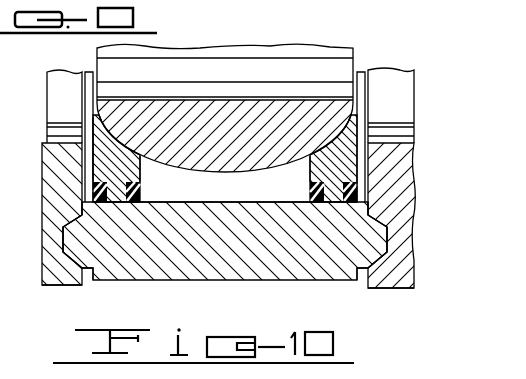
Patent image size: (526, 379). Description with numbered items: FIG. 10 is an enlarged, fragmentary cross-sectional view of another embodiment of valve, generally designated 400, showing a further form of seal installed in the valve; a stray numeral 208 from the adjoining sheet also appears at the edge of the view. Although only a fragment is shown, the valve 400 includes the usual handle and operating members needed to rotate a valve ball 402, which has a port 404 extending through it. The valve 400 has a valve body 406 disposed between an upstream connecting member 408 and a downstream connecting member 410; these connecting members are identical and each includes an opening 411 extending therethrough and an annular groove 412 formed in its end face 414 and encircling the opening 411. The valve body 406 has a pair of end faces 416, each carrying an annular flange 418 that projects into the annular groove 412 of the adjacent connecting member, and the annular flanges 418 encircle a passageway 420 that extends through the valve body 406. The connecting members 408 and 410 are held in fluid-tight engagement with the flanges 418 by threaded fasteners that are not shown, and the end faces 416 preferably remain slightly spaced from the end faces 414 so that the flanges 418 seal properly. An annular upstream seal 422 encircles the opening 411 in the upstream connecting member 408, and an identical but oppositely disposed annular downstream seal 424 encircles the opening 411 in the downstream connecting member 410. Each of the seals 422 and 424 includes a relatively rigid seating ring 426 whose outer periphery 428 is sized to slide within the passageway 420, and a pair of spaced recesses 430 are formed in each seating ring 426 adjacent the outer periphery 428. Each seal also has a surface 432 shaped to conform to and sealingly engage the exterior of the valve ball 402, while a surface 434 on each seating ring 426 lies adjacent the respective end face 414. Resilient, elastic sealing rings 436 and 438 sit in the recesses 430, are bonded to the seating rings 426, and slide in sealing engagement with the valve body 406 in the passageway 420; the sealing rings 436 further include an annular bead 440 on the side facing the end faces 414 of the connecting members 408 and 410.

The housing 208 is at (14, 68).
The valve 400 is at (362, 32).
The valve ball 402 is at (242, 139).
The port 404 is at (239, 78).
The valve body 406 is at (204, 274).
The upstream connecting member 408 is at (50, 287).
The downstream connecting member 410 is at (378, 290).
The opening 411 is at (56, 108).
The annular groove 412 is at (60, 212).
The end face 414 is at (48, 128).
The end face 416 is at (90, 280).
The annular flange 418 is at (84, 248).
The passageway 420 is at (206, 203).
The annular upstream seal 422 is at (97, 146).
The annular downstream seal 424 is at (349, 136).
The seating ring 426 is at (140, 172).
The outer periphery 428 is at (110, 204).
The recess 430 is at (126, 143).
The surface 432 is at (124, 101).
The surface 434 is at (91, 163).
The sealing ring 436 is at (92, 215).
The sealing ring 438 is at (140, 191).
The annular bead 440 is at (94, 190).